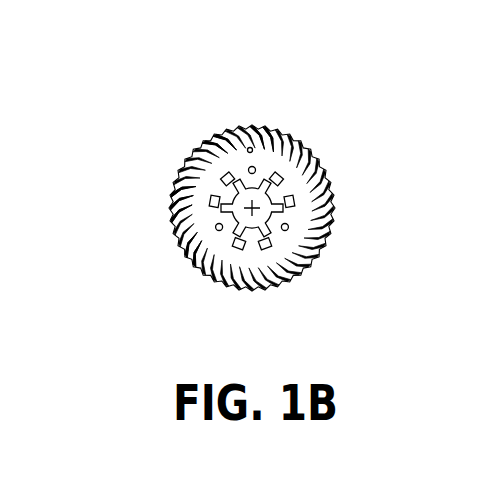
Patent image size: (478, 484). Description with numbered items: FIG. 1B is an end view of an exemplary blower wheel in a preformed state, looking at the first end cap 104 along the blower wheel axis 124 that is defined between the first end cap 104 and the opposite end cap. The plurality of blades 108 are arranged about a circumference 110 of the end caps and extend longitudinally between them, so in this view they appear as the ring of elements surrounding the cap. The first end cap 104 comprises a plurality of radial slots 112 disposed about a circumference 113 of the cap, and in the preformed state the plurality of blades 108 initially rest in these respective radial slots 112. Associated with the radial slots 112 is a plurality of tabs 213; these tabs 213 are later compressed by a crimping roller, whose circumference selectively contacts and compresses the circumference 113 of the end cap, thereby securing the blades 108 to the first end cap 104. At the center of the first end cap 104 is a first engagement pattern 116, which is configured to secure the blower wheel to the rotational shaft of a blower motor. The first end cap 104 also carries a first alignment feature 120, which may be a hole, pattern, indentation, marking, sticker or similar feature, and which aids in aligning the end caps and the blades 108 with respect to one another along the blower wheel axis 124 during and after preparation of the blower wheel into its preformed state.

The first end cap 104 is at (293, 173).
The plurality of blades 108 is at (250, 147).
The circumference 110 is at (358, 227).
The plurality of radial slots 112 is at (346, 176).
The circumference 113 is at (148, 202).
The first engagement pattern 116 is at (228, 198).
The first alignment feature 120 is at (262, 137).
The blower wheel axis 124 is at (250, 210).
The plurality of tabs 213 is at (217, 144).